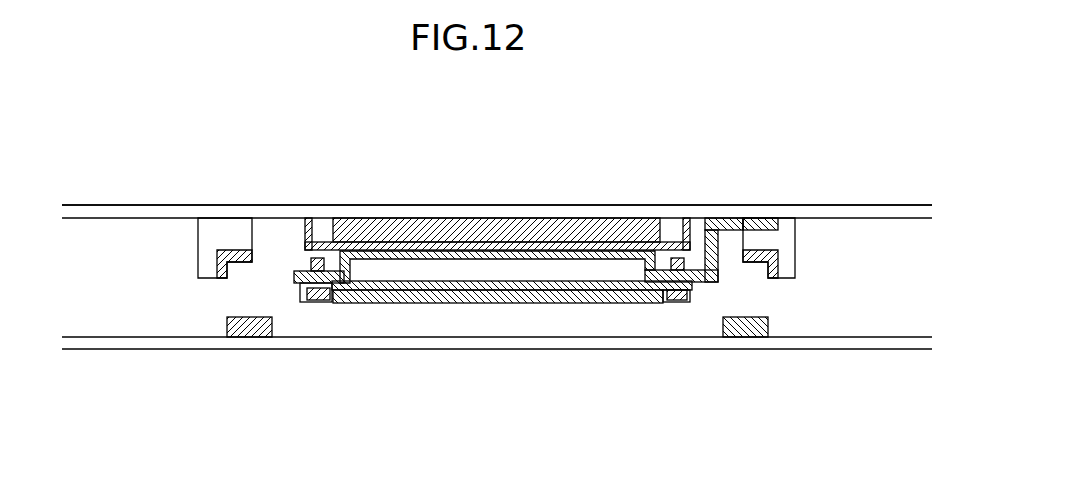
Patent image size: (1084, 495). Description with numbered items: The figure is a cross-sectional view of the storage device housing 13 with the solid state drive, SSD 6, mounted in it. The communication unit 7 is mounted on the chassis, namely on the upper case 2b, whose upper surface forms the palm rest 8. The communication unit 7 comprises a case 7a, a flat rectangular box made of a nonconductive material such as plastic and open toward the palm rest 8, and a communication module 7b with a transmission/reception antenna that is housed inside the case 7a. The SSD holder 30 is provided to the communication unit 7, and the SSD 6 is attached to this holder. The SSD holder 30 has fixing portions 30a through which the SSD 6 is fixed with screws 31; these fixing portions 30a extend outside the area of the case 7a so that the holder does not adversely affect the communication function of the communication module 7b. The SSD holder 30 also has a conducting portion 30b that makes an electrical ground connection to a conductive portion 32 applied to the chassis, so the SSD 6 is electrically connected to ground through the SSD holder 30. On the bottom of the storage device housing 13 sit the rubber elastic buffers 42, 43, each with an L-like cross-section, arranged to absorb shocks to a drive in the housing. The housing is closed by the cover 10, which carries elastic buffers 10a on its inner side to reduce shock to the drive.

The upper case 2b is at (92, 211).
The palm rest 8 is at (265, 204).
The communication unit 7 is at (427, 182).
The case 7a is at (298, 218).
The communication module 7b is at (547, 217).
The solid state drive SSD is at (512, 279).
The SSD holder 30 is at (443, 279).
The fixing portions 30a is at (295, 275).
The conducting portion 30b is at (723, 217).
The conductive portion 32 is at (760, 217).
The elastic buffer 42 is at (218, 279).
The elastic buffer 43 is at (768, 277).
The screws 31 is at (318, 302).
The storage device housing 13 is at (515, 318).
The SSD 6 is at (575, 303).
The cover 10 is at (378, 342).
The elastic buffers 10a is at (250, 337).